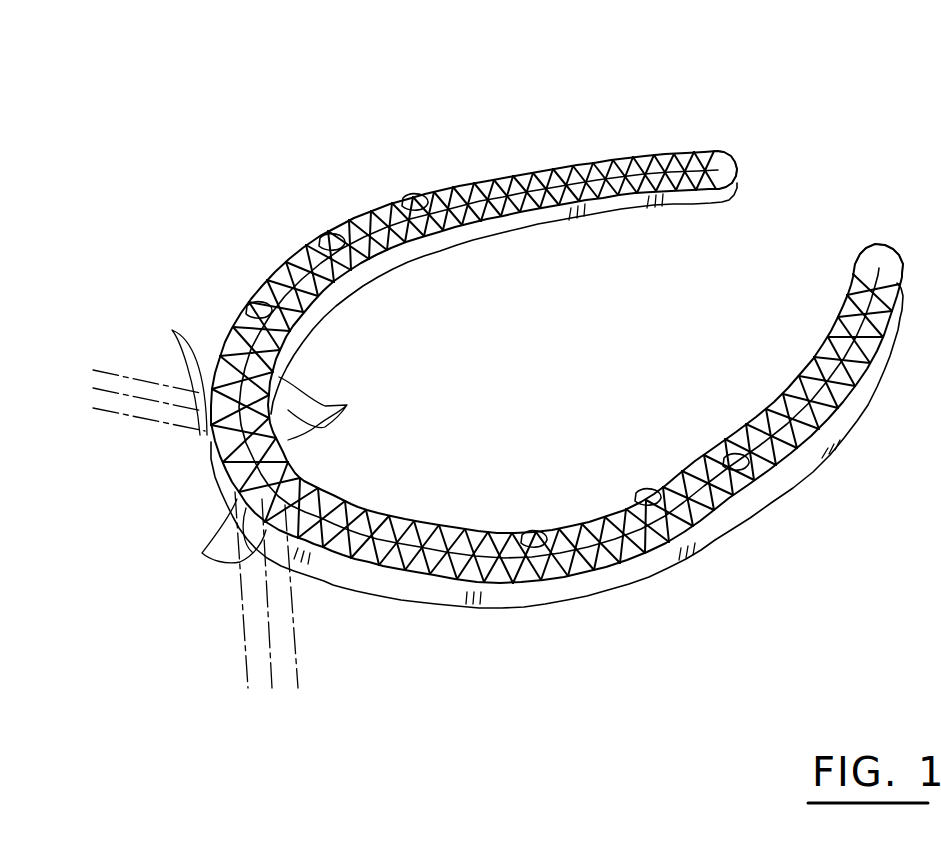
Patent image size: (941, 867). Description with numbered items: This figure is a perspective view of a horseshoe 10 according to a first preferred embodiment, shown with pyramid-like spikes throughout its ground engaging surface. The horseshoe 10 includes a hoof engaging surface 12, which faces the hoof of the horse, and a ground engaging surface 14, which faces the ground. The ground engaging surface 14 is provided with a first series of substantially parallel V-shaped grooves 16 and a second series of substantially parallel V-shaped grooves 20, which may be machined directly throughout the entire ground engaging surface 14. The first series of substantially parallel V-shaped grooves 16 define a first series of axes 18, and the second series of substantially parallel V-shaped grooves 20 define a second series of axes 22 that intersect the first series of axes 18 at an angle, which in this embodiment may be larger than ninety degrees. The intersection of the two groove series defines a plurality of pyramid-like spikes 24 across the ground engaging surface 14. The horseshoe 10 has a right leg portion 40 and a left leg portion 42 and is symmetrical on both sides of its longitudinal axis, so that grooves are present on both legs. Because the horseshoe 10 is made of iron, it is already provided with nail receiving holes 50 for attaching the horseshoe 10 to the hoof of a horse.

The horseshoe 10 is at (324, 134).
The hoof engaging surface 12 is at (414, 608).
The ground engaging surface 14 is at (413, 518).
The first series of substantially parallel V-shaped grooves 16 is at (174, 374).
The first series of axes 18 is at (86, 350).
The second series of substantially parallel V-shaped grooves 20 is at (214, 536).
The second series of axes 22 is at (312, 698).
The pyramid-like spikes 24 is at (332, 408).
The right leg portion 40 is at (885, 252).
The left leg portion 42 is at (730, 157).
The nail receiving holes 50 is at (326, 235).